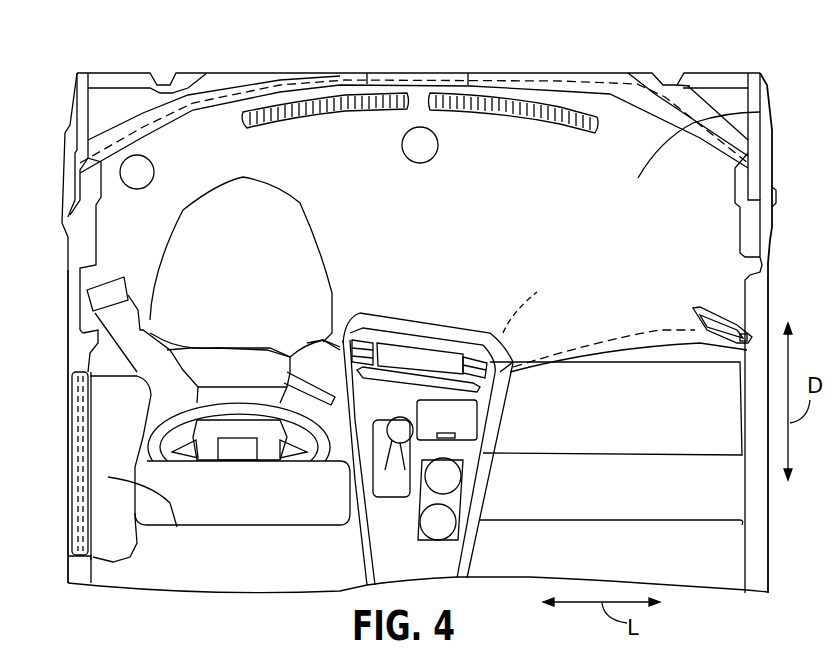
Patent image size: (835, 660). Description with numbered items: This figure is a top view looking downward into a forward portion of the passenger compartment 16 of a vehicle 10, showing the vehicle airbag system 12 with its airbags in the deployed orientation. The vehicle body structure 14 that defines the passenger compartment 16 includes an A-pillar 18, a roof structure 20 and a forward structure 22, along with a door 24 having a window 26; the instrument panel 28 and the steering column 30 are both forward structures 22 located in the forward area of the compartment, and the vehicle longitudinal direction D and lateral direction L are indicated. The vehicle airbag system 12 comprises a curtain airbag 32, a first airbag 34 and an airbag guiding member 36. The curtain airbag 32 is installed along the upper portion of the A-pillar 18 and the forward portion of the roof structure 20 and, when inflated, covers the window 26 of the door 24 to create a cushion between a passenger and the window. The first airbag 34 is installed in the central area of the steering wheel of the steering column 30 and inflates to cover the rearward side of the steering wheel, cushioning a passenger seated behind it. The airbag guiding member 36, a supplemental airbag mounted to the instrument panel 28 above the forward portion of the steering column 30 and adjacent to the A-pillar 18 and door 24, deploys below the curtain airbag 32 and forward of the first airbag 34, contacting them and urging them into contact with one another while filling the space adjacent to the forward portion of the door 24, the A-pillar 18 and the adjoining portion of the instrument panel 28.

The vehicle 10 is at (680, 41).
The vehicle airbag system 12 is at (220, 485).
The vehicle body structure 14 is at (557, 72).
The passenger compartment 16 is at (760, 112).
The A-pillar 18 is at (80, 360).
The roof structure 20 is at (80, 573).
The forward structure 22 is at (322, 140).
The door 24 is at (72, 418).
The window 26 is at (68, 512).
The instrument panel 28 is at (532, 333).
The steering column 30 is at (225, 412).
The curtain airbag 32 is at (177, 527).
The first airbag 34 is at (157, 553).
The airbag guiding member 36 is at (168, 387).